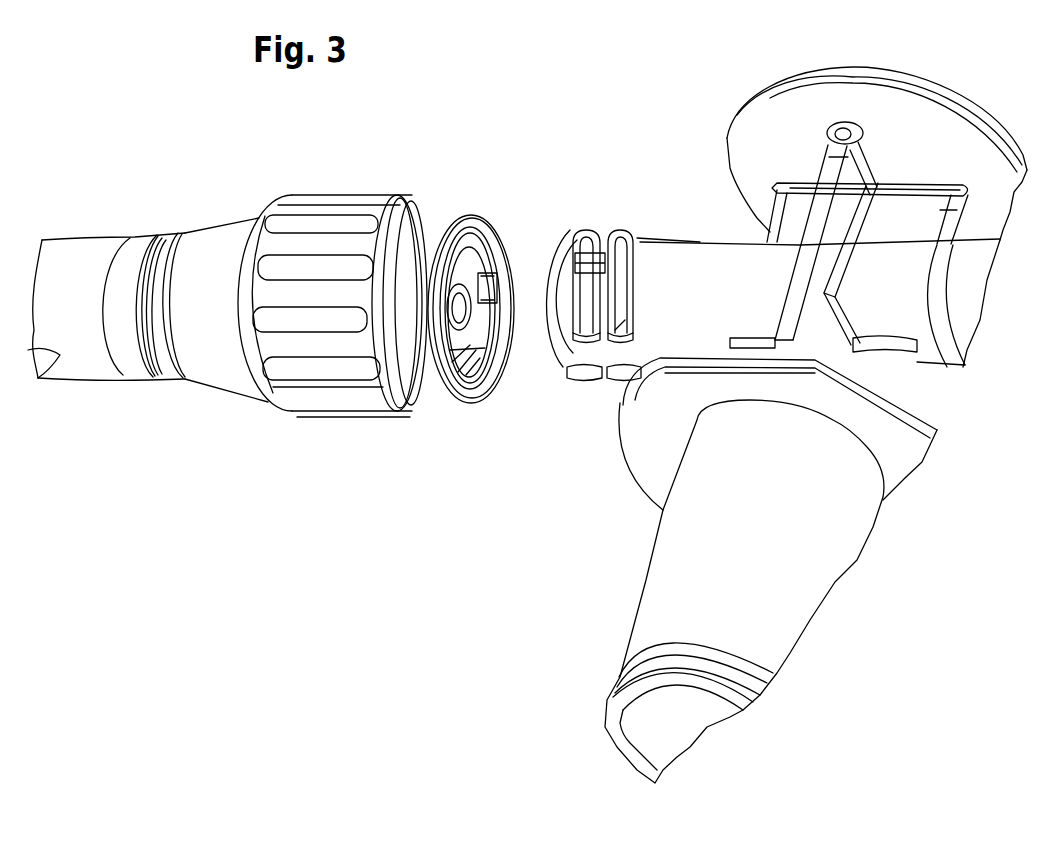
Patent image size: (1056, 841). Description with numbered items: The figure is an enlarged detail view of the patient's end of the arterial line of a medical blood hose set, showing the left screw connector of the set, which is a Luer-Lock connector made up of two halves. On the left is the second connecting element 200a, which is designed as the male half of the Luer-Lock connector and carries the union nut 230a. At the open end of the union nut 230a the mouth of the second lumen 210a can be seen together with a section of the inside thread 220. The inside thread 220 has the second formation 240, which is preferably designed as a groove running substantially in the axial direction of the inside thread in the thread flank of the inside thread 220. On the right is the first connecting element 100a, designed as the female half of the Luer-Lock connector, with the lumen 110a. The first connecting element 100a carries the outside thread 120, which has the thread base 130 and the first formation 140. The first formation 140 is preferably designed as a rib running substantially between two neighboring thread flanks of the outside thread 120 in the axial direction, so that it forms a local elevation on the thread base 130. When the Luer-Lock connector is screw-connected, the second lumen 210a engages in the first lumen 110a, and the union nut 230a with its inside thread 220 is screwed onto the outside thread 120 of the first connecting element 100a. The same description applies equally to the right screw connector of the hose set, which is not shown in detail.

The first connecting element 100a is at (660, 250).
The lumen 110a is at (543, 300).
The outside thread 120 is at (612, 377).
The thread base 130 is at (602, 307).
The first formation 140 is at (598, 240).
The second connecting element 200a is at (128, 232).
The second lumen 210a is at (470, 290).
The inside thread 220 is at (518, 233).
The union nut 230a is at (350, 405).
The second formation 240 is at (472, 290).